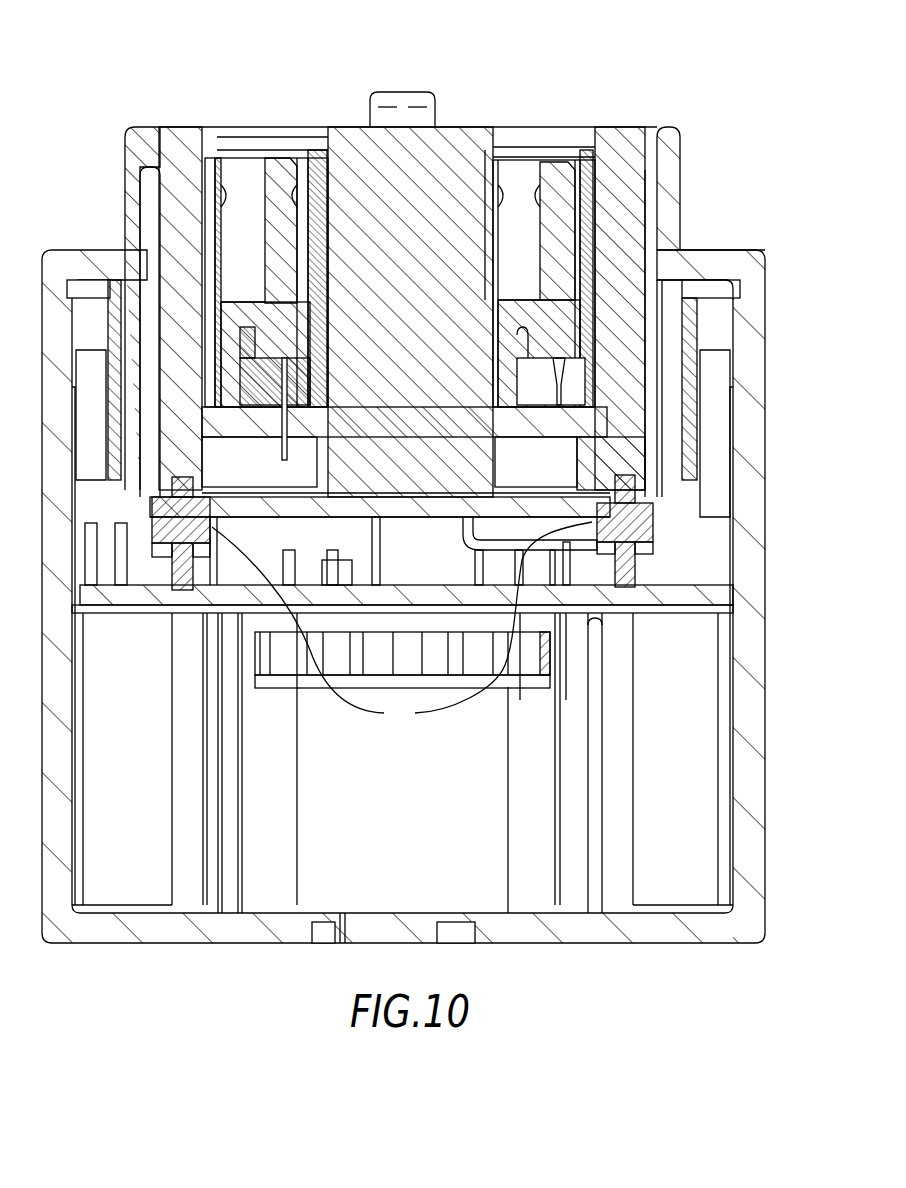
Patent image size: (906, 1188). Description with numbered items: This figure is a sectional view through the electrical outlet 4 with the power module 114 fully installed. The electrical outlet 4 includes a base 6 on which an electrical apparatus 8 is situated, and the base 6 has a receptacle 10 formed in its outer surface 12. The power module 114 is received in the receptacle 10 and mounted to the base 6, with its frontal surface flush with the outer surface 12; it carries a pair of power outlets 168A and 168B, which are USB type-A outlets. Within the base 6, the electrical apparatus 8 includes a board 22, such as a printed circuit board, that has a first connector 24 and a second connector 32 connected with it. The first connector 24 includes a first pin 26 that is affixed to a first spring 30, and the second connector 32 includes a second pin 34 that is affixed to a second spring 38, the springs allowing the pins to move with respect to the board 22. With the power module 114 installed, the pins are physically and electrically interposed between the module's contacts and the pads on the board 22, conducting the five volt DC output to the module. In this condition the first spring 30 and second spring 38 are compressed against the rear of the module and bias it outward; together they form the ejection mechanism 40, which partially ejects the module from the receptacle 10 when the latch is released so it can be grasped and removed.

The electrical outlet 4 is at (692, 147).
The base 6 is at (720, 245).
The electrical apparatus 8 is at (112, 624).
The receptacle 10 is at (150, 196).
The outer surface 12 is at (138, 126).
The board 22 is at (162, 608).
The first connector 24 is at (700, 606).
The first pin 26 is at (656, 606).
The first spring 30 is at (648, 516).
The second connector 32 is at (150, 570).
The second pin 34 is at (205, 610).
The second spring 38 is at (160, 505).
The ejection mechanism 40 is at (402, 625).
The power module 114 is at (342, 116).
The power outlet 168A is at (240, 165).
The power outlet 168B is at (515, 180).